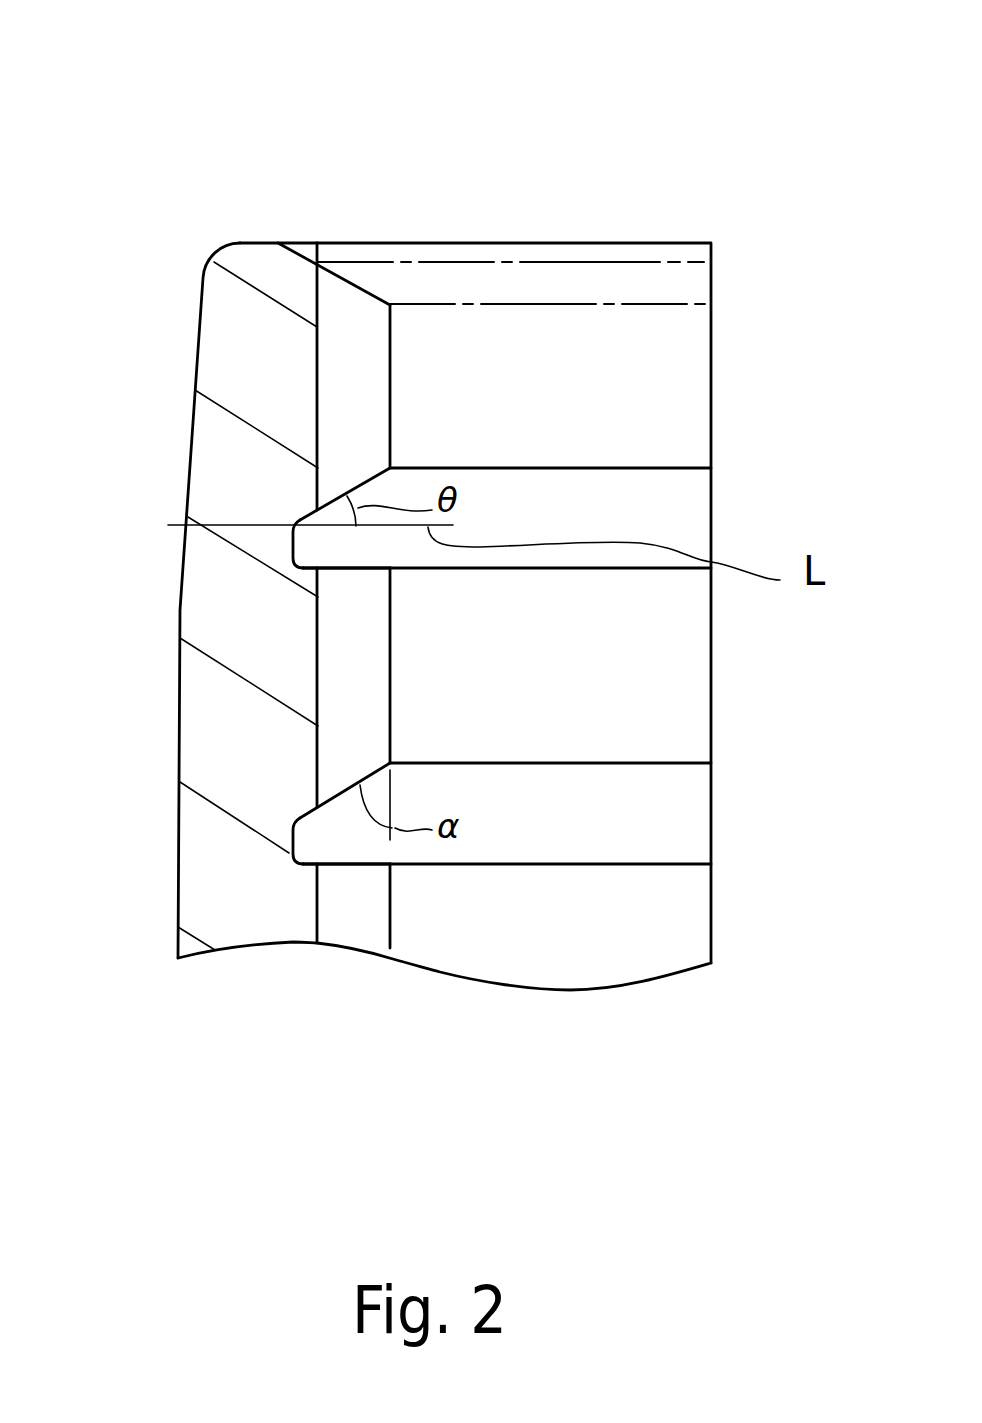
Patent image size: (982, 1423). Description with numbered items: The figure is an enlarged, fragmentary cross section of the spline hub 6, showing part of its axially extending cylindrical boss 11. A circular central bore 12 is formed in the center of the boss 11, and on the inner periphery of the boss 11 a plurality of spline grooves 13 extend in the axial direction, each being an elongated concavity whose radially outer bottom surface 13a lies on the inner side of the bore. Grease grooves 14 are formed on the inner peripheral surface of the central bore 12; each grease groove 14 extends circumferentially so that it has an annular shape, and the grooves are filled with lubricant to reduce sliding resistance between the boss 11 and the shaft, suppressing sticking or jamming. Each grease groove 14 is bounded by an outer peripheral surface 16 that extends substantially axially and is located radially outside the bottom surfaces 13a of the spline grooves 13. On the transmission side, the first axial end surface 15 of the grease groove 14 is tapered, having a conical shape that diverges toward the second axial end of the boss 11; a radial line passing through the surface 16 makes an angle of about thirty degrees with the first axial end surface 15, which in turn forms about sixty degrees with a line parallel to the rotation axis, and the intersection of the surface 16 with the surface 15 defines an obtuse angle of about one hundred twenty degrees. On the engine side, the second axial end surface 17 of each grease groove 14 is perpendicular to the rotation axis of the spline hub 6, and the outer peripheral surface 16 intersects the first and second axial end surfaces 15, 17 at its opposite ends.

The spline hub 6 is at (535, 120).
The cylindrical boss 11 is at (218, 335).
The central bore 12 is at (620, 368).
The spline groove 13 is at (357, 323).
The bottom surface of spline groove 13a is at (317, 377).
The grease groove 14 is at (668, 514).
The first axial end surface 15 is at (392, 472).
The outer peripheral surface 16 is at (300, 552).
The second axial end surface 17 is at (362, 566).